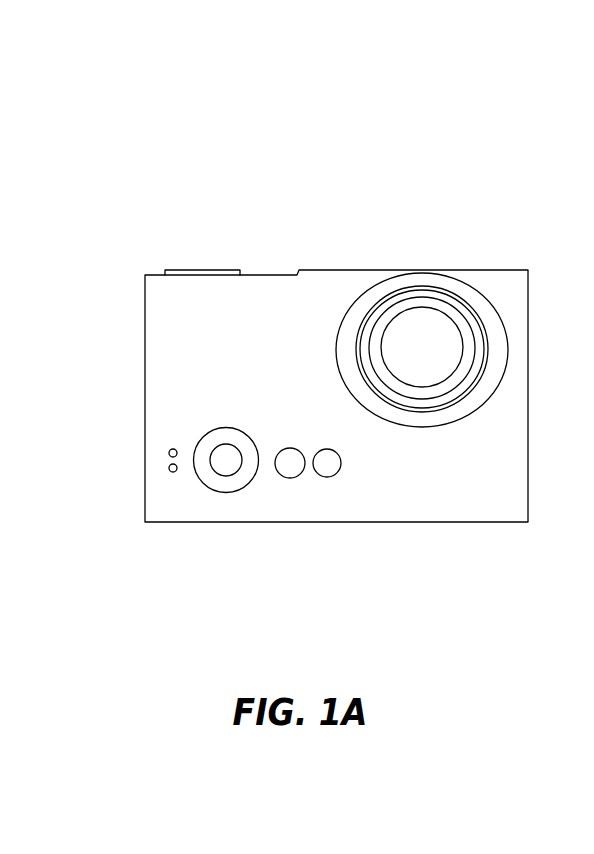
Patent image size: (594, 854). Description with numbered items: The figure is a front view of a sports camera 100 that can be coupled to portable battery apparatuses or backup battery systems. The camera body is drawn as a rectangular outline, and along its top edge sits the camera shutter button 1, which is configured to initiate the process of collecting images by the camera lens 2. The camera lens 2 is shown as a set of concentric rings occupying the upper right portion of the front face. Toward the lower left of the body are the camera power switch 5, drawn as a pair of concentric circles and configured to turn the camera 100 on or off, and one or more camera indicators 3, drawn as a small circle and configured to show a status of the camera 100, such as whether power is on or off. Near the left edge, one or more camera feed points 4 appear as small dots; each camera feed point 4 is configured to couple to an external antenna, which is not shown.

The sports camera 100 is at (248, 212).
The camera shutter button 1 is at (163, 268).
The camera lens 2 is at (423, 342).
The camera indicator 3 is at (290, 462).
The camera feed point 4 is at (170, 450).
The camera power switch 5 is at (226, 461).